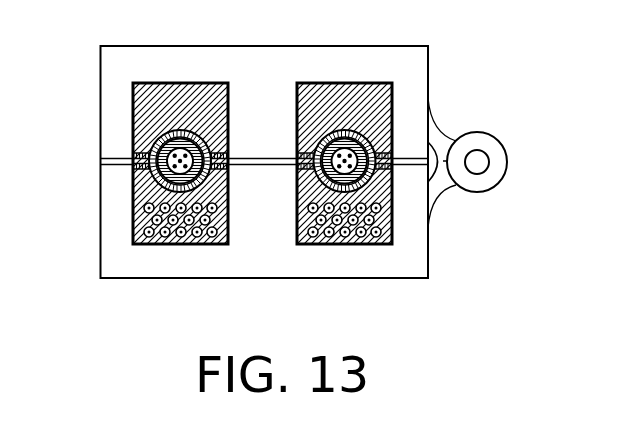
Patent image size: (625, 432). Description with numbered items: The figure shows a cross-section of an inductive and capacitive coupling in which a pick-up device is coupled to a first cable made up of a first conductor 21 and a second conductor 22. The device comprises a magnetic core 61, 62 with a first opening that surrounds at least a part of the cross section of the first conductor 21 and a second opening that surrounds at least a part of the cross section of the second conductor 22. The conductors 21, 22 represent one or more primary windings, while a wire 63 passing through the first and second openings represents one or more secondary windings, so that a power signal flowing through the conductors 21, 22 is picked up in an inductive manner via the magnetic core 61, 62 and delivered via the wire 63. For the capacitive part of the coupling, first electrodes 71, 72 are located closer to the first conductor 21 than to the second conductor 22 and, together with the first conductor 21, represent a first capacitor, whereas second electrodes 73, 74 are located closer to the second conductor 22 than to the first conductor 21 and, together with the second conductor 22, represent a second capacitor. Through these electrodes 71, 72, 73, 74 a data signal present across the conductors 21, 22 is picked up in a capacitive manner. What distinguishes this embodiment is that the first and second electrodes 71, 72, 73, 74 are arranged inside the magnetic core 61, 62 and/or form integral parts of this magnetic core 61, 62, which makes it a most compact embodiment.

The first conductor 21 is at (180, 160).
The second conductor 22 is at (345, 160).
The magnetic core 61 is at (117, 76).
The magnetic core 62 is at (117, 258).
The wire 63 is at (181, 245).
The first electrode 71 is at (158, 141).
The first electrode 72 is at (150, 193).
The second electrode 73 is at (392, 121).
The second electrode 74 is at (392, 196).